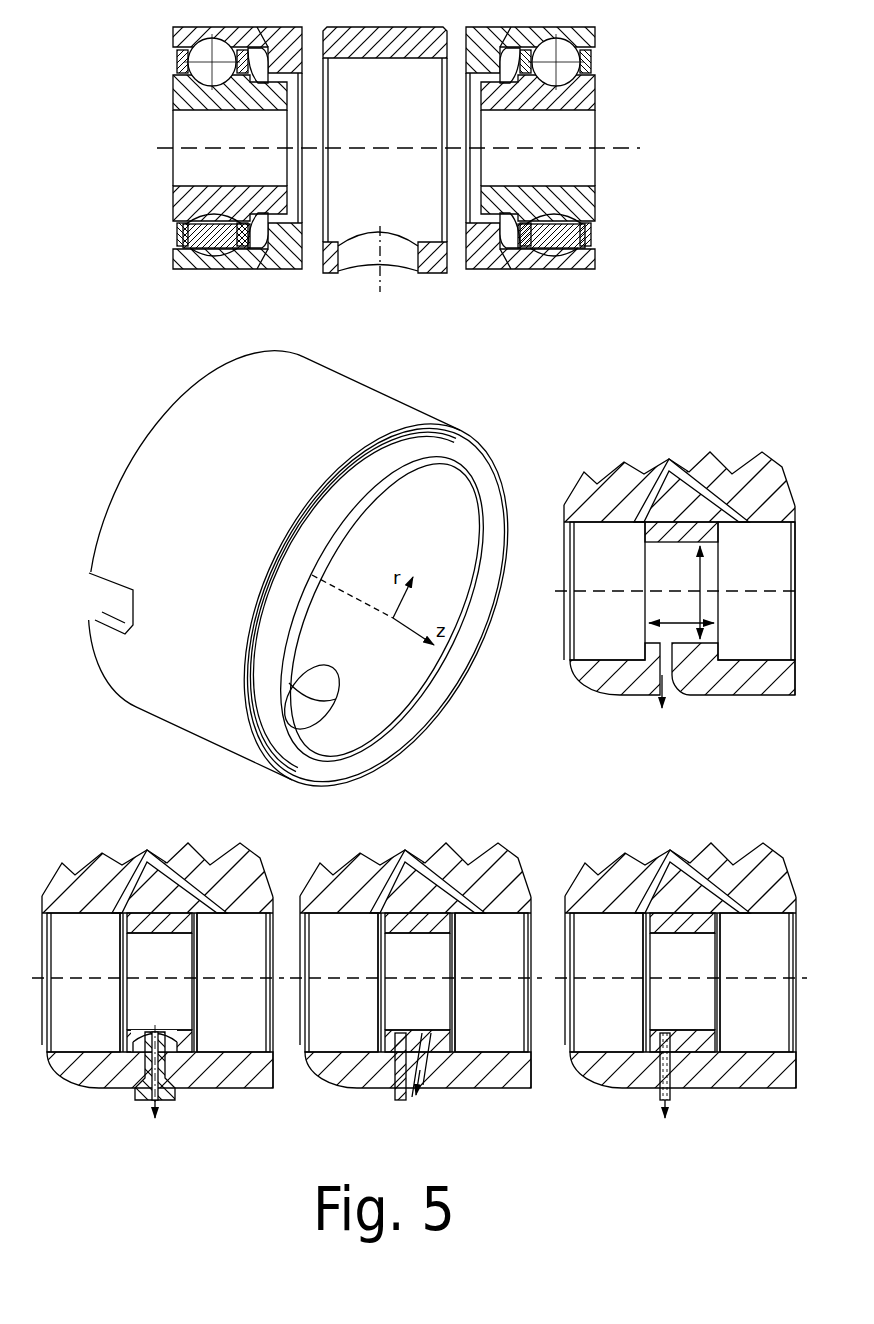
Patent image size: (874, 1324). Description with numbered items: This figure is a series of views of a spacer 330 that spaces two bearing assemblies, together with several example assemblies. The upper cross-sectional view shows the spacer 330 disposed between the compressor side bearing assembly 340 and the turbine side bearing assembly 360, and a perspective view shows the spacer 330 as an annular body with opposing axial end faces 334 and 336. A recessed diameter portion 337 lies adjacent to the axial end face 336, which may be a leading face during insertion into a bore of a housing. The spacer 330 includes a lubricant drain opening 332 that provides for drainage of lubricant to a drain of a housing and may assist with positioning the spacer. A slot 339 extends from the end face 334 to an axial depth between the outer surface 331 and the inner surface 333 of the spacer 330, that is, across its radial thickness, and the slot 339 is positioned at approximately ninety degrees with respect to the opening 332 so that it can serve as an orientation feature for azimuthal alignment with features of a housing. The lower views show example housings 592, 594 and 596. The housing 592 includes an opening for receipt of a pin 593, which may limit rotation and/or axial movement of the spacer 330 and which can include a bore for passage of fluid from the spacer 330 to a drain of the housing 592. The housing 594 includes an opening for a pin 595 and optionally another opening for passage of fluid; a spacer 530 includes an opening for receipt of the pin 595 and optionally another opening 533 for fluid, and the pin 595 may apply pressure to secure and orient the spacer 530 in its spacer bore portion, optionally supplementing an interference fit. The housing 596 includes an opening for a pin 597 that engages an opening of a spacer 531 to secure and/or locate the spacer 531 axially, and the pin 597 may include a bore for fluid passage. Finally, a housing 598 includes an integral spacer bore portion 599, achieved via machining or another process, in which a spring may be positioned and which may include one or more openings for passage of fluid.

The spacer 330 is at (427, 297).
The compressor side bearing assembly 340 is at (180, 294).
The turbine side bearing assembly 360 is at (602, 297).
The outer surface 331 is at (309, 381).
The lubricant drain opening 332 is at (330, 680).
The inner surface of ring 333 is at (373, 557).
The axial end face 334 is at (124, 457).
The axial end face 336 is at (418, 759).
The recessed diameter portion 337 is at (425, 435).
The slot 339 is at (108, 613).
The spacer 530 is at (375, 942).
The spacer 531 is at (638, 947).
The opening 533 is at (440, 1030).
The housing 592 is at (265, 886).
The pin 593 is at (131, 1100).
The housing 594 is at (523, 886).
The pin 595 is at (378, 1100).
The housing 596 is at (786, 886).
The pin 597 is at (640, 1103).
The housing 598 is at (786, 495).
The integral spacer bore portion 599 is at (652, 549).